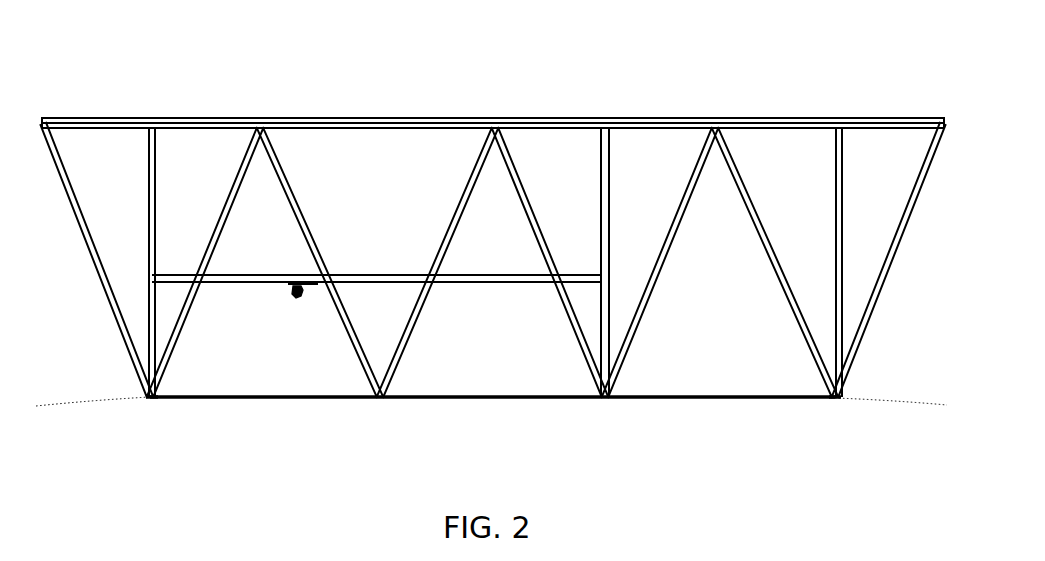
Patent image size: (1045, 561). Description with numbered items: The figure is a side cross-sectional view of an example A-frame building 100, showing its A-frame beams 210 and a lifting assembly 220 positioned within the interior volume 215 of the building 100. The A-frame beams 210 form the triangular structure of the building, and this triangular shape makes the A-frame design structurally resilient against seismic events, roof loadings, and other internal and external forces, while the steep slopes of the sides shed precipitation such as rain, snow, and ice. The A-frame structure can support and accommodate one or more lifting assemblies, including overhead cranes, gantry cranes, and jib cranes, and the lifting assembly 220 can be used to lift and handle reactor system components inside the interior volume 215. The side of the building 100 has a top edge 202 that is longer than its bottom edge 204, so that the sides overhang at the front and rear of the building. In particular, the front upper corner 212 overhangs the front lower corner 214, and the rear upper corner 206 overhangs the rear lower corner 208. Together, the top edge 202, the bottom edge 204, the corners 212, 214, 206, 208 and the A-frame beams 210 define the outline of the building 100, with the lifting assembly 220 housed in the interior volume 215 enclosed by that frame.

The A-frame building 100 is at (270, 70).
The top edge 202 is at (752, 117).
The bottom edge 204 is at (627, 400).
The rear upper corner 206 is at (928, 117).
The rear lower corner 208 is at (835, 399).
The A-frame beams 210 is at (298, 167).
The front upper corner 212 is at (48, 117).
The front lower corner 214 is at (150, 398).
The interior volume 215 is at (732, 357).
The lifting assembly 220 is at (305, 322).